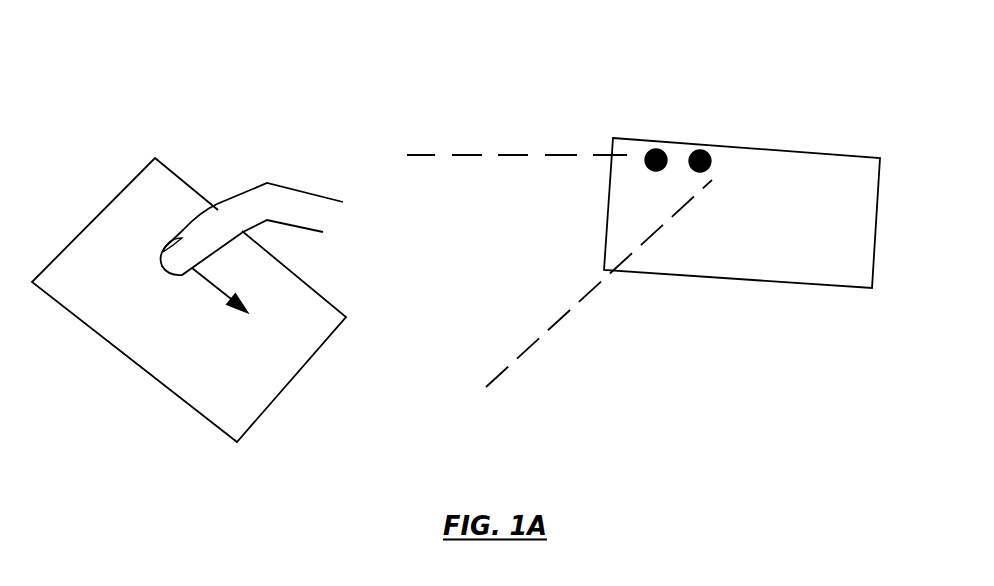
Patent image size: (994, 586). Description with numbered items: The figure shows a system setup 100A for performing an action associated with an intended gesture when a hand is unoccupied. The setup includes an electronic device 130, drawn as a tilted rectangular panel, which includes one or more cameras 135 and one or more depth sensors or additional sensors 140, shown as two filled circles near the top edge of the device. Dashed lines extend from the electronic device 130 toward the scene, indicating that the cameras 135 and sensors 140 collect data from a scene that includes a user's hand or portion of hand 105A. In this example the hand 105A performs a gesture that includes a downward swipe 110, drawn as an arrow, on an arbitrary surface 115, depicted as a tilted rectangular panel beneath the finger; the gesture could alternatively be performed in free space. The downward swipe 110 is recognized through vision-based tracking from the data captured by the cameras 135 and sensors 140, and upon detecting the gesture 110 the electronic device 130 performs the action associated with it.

The system setup 100A is at (708, 68).
The hand or portion of hand 105A is at (290, 190).
The downward swipe 110 is at (215, 282).
The surface 115 is at (107, 237).
The electronic device 130 is at (878, 222).
The cameras 135 is at (665, 153).
The depth sensors or additional sensors 140 is at (710, 157).